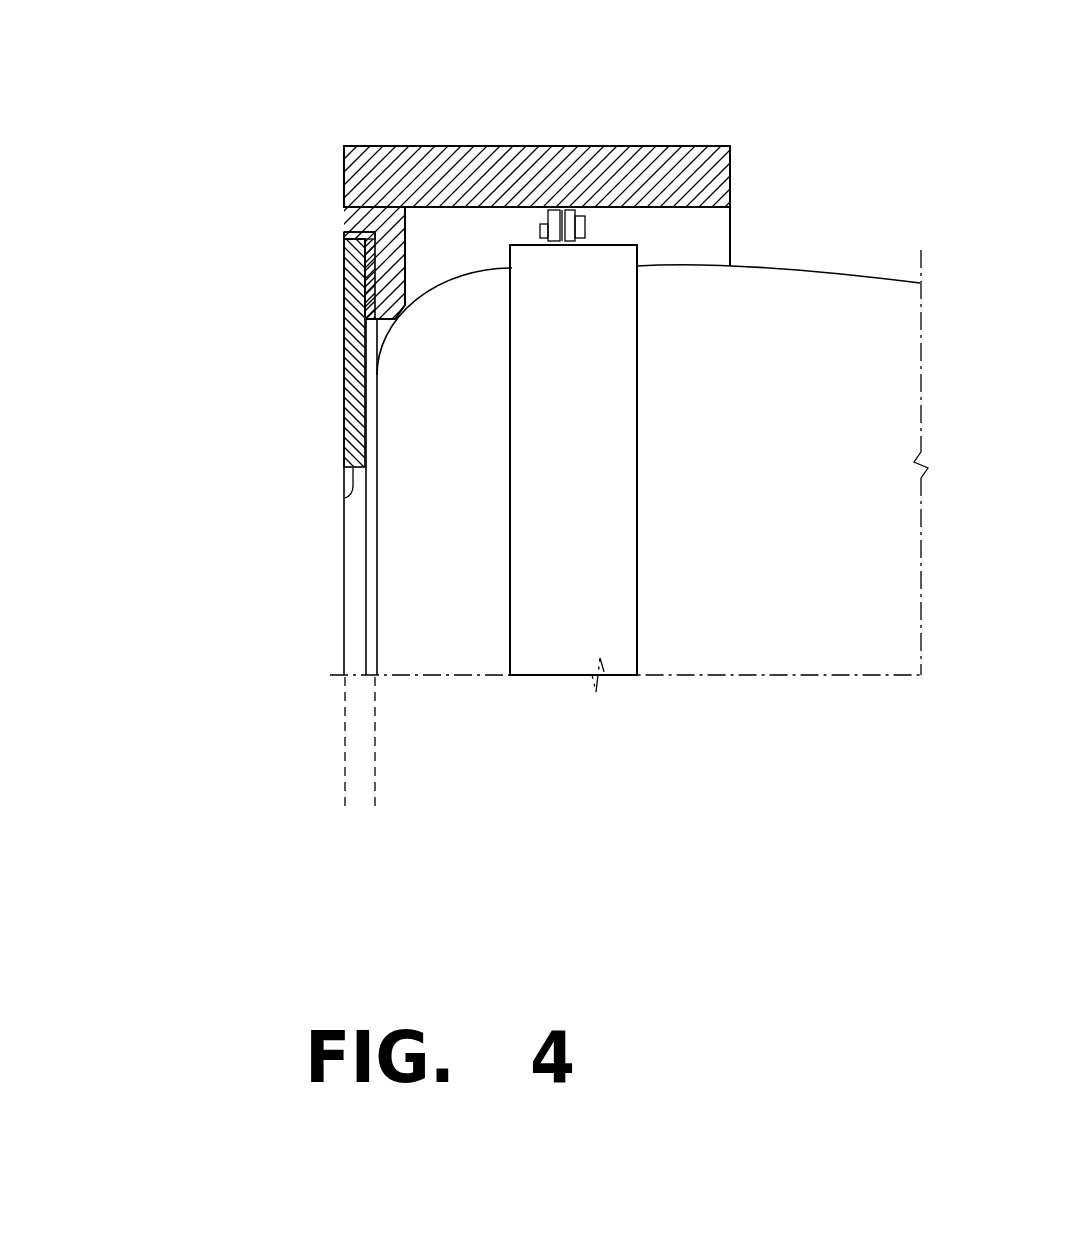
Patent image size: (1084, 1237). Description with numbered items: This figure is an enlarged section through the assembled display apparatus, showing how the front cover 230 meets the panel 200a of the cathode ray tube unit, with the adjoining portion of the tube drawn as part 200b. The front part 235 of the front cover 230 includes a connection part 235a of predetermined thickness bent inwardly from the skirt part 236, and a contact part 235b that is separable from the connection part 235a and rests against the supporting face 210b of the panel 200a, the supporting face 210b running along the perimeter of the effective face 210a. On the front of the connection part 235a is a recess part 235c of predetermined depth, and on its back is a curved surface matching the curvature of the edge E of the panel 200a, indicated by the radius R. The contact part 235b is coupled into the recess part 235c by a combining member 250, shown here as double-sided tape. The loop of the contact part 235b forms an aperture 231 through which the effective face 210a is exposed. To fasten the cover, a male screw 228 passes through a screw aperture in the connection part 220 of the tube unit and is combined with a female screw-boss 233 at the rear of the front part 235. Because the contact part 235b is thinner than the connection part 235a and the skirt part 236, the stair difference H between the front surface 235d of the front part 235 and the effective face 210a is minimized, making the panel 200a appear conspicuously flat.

The panel 200a is at (452, 675).
The chamber body upper portion 200b is at (782, 675).
The effective face 210a is at (378, 576).
The supporting face 210b is at (433, 285).
The connection part 220 is at (561, 209).
The male screw 228 is at (587, 209).
The front cover 230 is at (132, 158).
The aperture 231 is at (344, 499).
The female screw-boss 233 is at (544, 209).
The front part 235 is at (220, 205).
The connection part 235a is at (357, 203).
The contact part 235b is at (345, 395).
The recess part 235c is at (367, 239).
The front surface 235d is at (343, 432).
The skirt part 236 is at (465, 146).
The combining member 250 is at (377, 248).
The radius of curvature R is at (400, 312).
The edge E is at (390, 345).
The stair difference H is at (430, 798).